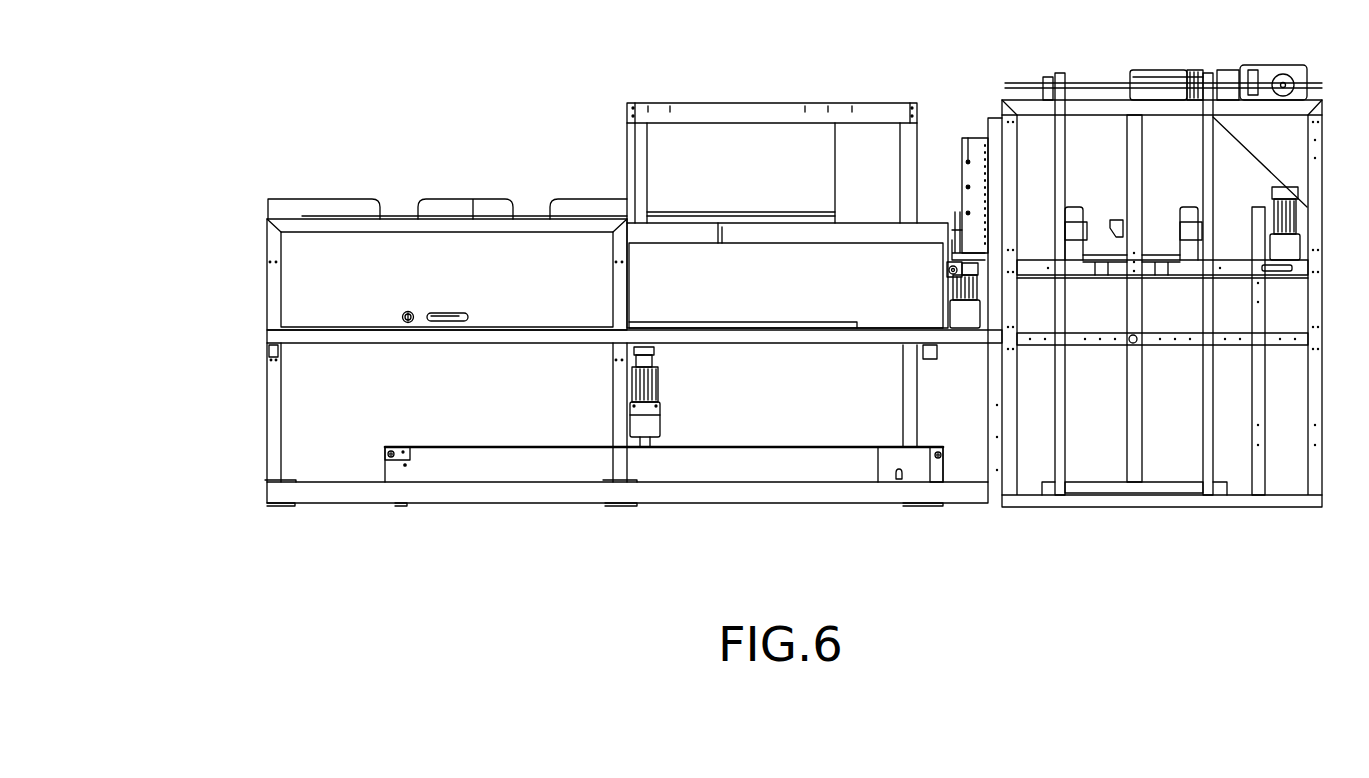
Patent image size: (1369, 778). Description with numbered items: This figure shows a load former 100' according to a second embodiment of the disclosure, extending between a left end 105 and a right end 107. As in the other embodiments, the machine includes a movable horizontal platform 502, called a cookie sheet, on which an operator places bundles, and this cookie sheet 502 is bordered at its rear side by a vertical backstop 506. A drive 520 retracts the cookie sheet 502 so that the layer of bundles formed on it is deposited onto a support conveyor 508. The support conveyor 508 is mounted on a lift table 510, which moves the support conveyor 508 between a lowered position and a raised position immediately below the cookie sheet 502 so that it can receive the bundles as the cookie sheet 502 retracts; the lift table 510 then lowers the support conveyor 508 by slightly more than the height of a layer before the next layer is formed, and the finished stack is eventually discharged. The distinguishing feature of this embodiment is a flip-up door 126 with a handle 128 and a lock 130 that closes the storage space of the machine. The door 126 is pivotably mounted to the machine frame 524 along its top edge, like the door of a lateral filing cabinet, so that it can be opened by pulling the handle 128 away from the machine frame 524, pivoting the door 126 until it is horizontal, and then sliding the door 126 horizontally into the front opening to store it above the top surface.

The load former 100' is at (859, 274).
The left end 105 is at (244, 364).
The right end 107 is at (937, 168).
The flip-up door 126 is at (303, 260).
The handle 128 is at (462, 323).
The lock 130 is at (406, 323).
The movable horizontal platform 502 is at (808, 324).
The vertical backstop 506 is at (735, 268).
The support conveyor 508 is at (706, 448).
The lift table 510 is at (844, 470).
The drive 520 is at (648, 437).
The machine frame 524 is at (268, 440).